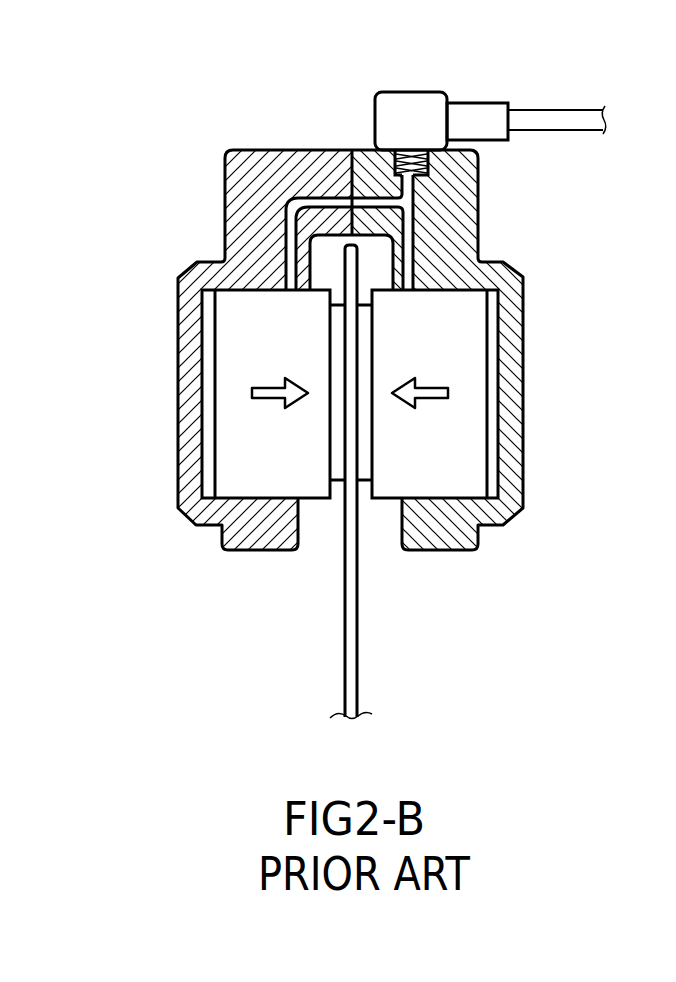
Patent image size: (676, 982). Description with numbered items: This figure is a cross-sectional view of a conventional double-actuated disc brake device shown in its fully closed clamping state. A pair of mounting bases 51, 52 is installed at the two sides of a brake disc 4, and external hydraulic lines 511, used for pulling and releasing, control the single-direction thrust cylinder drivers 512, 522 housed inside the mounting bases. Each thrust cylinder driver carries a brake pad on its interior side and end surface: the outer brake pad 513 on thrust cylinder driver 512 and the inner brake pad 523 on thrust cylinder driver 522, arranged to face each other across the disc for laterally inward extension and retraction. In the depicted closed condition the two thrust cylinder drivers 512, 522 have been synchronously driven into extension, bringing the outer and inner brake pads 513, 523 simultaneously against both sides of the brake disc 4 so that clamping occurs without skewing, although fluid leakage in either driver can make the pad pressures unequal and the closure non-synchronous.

The brake disc 4 is at (352, 655).
The mounting base 51 is at (463, 235).
The mounting base 52 is at (257, 227).
The external hydraulic lines 511 is at (408, 117).
The thrust cylinder driver 512 is at (468, 445).
The thrust cylinder driver 522 is at (242, 440).
The outer brake pad 513 is at (358, 488).
The inner brake pad 523 is at (345, 488).